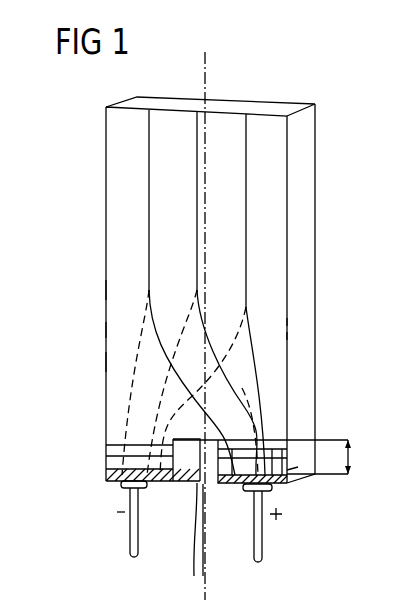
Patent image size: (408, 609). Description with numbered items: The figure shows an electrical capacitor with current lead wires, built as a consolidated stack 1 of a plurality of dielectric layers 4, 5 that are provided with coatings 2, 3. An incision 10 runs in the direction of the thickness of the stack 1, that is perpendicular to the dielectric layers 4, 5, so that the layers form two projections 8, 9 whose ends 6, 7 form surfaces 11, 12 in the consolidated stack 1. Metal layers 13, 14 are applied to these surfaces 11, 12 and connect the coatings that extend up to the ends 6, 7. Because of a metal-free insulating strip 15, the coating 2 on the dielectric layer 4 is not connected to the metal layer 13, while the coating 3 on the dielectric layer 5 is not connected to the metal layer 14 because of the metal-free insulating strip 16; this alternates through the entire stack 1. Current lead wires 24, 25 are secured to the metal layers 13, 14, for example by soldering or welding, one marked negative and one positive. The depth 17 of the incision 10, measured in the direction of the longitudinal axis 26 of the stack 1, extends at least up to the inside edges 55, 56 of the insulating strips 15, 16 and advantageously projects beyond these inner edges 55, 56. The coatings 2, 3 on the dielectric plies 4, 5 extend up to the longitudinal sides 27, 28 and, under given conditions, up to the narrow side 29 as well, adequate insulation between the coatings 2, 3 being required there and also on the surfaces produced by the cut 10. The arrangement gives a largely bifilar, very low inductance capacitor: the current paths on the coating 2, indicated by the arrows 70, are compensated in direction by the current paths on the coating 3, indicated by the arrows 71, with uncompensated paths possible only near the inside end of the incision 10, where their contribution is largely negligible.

The consolidated stack 1 is at (278, 155).
The coating 2 is at (125, 361).
The coating 3 is at (288, 335).
The dielectric layer 4 is at (106, 330).
The dielectric layer 5 is at (288, 322).
The end 6 is at (161, 482).
The end 7 is at (235, 484).
The projection 8 is at (115, 462).
The projection 9 is at (290, 483).
The incision 10 is at (201, 543).
The surface 11 is at (186, 482).
The surface 12 is at (298, 468).
The metal layer 13 is at (118, 483).
The metal layer 14 is at (274, 492).
The metal-free insulating strip 15 is at (112, 447).
The metal-free insulating strip 16 is at (283, 441).
The depth of the incision 17 is at (349, 460).
The current lead wire 24 is at (133, 542).
The current lead wire 25 is at (262, 548).
The longitudinal axis 26 is at (210, 70).
The longitudinal side 27 is at (106, 290).
The longitudinal side 28 is at (305, 293).
The narrow side 29 is at (255, 108).
The inside edge 55 is at (172, 382).
The inside edge 56 is at (245, 420).
The arrows 70 is at (151, 303).
The arrows 71 is at (142, 315).